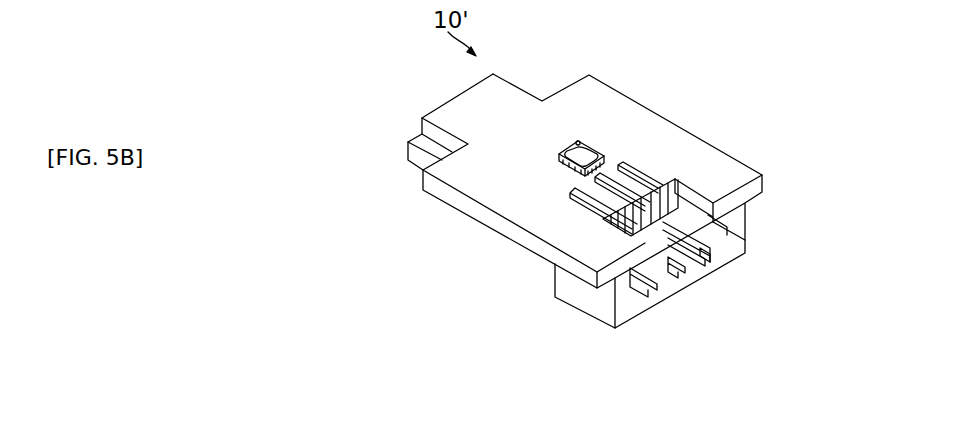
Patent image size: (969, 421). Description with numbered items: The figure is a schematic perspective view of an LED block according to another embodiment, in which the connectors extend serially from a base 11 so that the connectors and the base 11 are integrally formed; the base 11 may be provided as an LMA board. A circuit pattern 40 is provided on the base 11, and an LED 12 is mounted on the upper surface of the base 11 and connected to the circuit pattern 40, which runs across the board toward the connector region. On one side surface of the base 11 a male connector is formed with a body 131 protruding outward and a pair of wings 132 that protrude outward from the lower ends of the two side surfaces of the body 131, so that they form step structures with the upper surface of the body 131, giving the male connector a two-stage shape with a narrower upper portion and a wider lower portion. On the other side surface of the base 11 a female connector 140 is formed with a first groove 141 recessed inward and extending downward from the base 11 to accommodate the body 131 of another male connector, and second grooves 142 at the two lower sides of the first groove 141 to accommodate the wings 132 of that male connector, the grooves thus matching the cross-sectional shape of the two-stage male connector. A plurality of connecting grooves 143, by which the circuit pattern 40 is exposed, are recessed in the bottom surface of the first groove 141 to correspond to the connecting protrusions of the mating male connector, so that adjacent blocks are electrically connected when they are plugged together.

The base 11 is at (603, 104).
The LED 12 is at (585, 153).
The circuit pattern 40 is at (639, 159).
The body 131 is at (455, 99).
The wings 132 is at (416, 155).
The female connector 140 is at (677, 182).
The first groove 141 is at (706, 222).
The second grooves 142 is at (723, 218).
The connecting grooves 143 is at (702, 260).